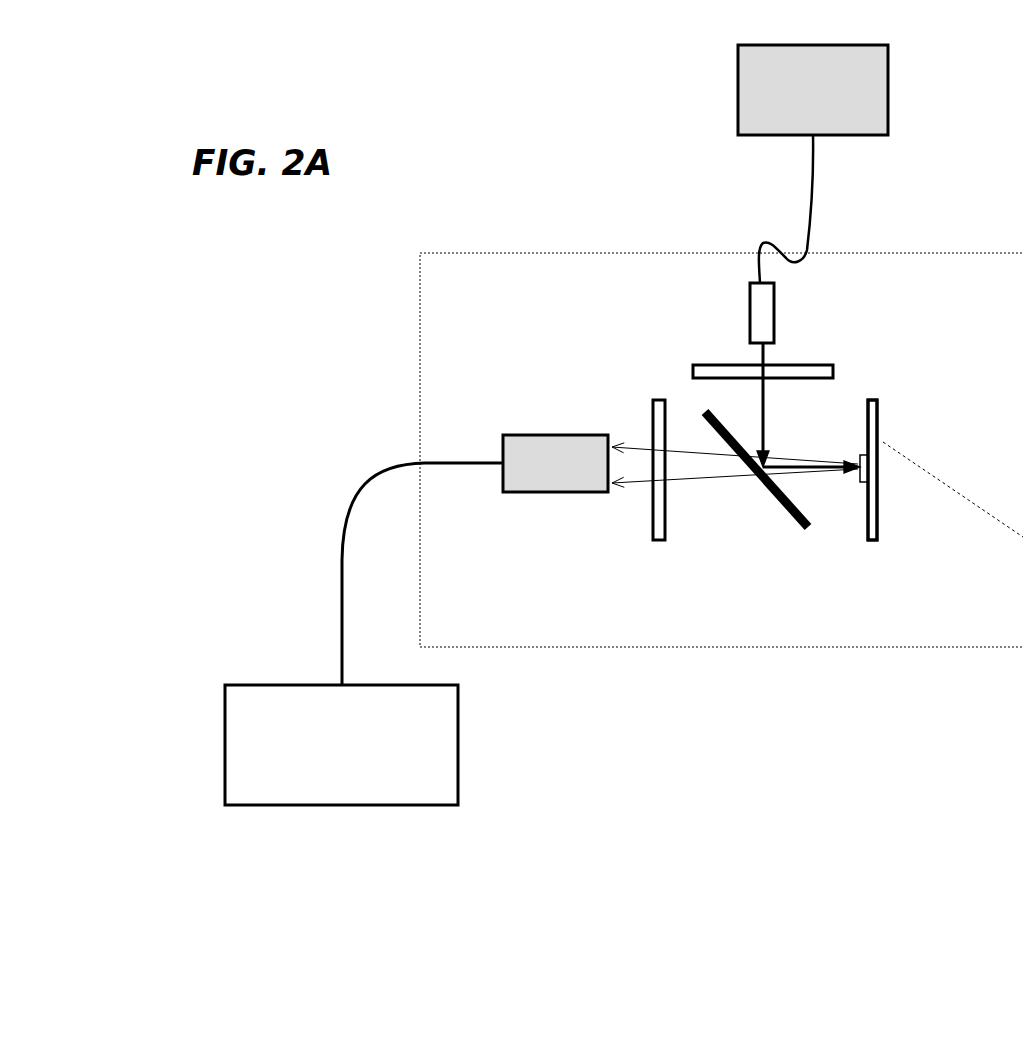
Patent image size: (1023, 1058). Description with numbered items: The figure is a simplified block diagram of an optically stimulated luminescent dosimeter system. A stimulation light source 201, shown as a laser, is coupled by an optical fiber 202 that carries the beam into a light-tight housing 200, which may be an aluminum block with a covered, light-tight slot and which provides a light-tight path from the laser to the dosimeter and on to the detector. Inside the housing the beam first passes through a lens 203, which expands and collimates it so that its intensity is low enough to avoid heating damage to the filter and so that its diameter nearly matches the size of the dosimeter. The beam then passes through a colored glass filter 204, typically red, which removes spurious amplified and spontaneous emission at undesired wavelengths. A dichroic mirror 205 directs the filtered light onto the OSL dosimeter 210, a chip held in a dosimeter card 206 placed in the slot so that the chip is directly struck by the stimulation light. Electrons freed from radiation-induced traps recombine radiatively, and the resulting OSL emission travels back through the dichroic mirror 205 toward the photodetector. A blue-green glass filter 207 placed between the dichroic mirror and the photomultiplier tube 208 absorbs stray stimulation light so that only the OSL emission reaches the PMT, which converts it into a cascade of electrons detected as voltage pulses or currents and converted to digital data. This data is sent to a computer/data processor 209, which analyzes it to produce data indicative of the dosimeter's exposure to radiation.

The light-tight housing 200 is at (370, 348).
The stimulation light source 201 is at (902, 90).
The optical fiber 202 is at (834, 203).
The lens 203 is at (723, 316).
The colored glass filter 204 is at (812, 353).
The dichroic mirror 205 is at (775, 521).
The dosimeter card 206 is at (895, 522).
The OSL dosimeter 210 is at (872, 470).
The blue-green glass filter 207 is at (636, 406).
The photomultiplier tube 208 is at (515, 497).
The computer/data processor 209 is at (209, 736).